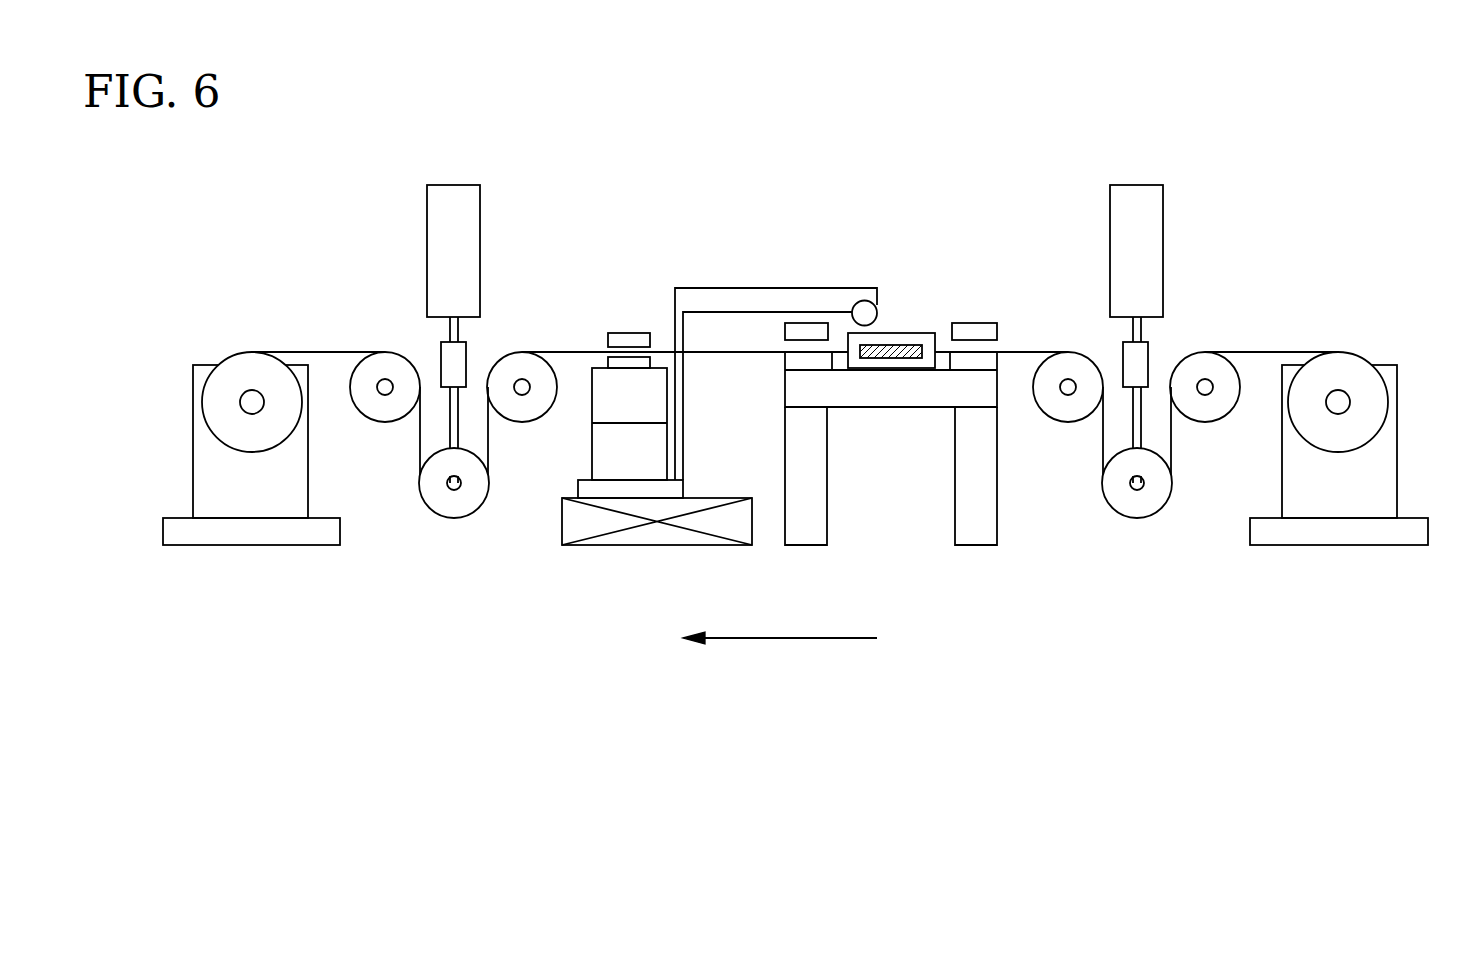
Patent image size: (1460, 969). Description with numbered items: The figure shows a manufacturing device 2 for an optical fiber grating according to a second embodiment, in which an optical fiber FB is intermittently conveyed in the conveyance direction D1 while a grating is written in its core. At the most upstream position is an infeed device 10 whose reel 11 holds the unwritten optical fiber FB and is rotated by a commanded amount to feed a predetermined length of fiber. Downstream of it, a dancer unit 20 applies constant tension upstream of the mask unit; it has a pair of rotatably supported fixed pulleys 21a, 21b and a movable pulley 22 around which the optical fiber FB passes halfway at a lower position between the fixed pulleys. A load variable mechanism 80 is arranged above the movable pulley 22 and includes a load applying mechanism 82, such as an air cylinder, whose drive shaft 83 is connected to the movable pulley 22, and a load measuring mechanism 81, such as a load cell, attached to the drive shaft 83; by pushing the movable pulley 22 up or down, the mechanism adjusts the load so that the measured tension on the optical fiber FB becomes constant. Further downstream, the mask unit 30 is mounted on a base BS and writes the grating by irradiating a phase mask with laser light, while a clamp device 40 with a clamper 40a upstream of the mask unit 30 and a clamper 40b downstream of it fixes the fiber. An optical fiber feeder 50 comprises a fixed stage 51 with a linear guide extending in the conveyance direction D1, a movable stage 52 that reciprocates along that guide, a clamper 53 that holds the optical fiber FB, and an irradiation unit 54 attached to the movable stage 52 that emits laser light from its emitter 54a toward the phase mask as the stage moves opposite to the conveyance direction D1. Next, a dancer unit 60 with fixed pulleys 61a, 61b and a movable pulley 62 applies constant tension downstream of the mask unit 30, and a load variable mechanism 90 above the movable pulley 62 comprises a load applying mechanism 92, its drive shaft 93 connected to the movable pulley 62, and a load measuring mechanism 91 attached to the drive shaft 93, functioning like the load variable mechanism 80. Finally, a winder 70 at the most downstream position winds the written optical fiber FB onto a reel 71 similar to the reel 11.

The manufacturing device 2 is at (1259, 198).
The infeed device 10 is at (1355, 398).
The reel 11 is at (1372, 405).
The dancer unit 20 is at (1122, 414).
The fixed pulley 21a is at (1203, 410).
The fixed pulley 21b is at (1067, 410).
The movable pulley 22 is at (1117, 495).
The mask unit 30 is at (926, 313).
The clamp device 40 is at (892, 463).
The clamper 40a is at (963, 386).
The clamper 40b is at (820, 386).
The optical fiber feeder 50 is at (725, 398).
The fixed stage 51 is at (657, 535).
The movable stage 52 is at (603, 450).
The clamper 53 is at (640, 316).
The irradiation unit 54 is at (798, 302).
The emitter 54a is at (870, 310).
The dancer unit 60 is at (469, 414).
The fixed pulley 61a is at (522, 410).
The fixed pulley 61b is at (387, 408).
The movable pulley 62 is at (435, 495).
The winder 70 is at (233, 398).
The reel 71 is at (217, 403).
The load variable mechanism 80 is at (1079, 286).
The load measuring mechanism 81 is at (1132, 363).
The load applying mechanism 82 is at (1122, 248).
The drive shaft 83 is at (1142, 430).
The load variable mechanism 90 is at (511, 286).
The load measuring mechanism 91 is at (458, 363).
The load applying mechanism 92 is at (468, 248).
The drive shaft 93 is at (462, 430).
The base BS is at (975, 533).
The optical fiber FB is at (1277, 350).
The conveyance direction D1 is at (787, 640).